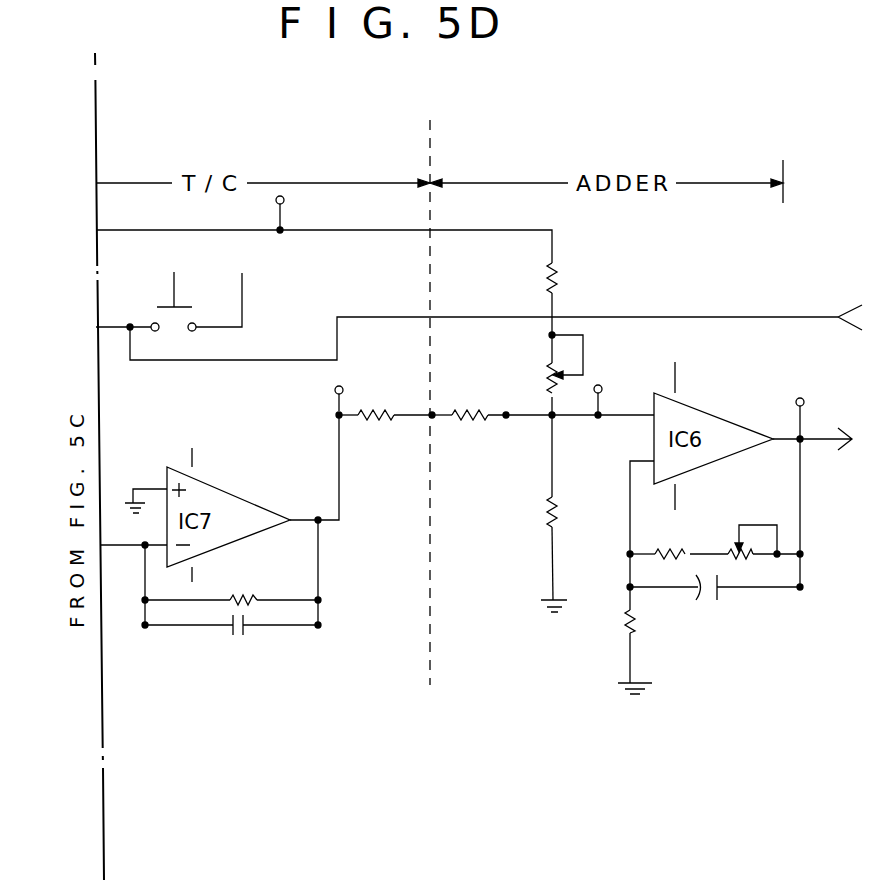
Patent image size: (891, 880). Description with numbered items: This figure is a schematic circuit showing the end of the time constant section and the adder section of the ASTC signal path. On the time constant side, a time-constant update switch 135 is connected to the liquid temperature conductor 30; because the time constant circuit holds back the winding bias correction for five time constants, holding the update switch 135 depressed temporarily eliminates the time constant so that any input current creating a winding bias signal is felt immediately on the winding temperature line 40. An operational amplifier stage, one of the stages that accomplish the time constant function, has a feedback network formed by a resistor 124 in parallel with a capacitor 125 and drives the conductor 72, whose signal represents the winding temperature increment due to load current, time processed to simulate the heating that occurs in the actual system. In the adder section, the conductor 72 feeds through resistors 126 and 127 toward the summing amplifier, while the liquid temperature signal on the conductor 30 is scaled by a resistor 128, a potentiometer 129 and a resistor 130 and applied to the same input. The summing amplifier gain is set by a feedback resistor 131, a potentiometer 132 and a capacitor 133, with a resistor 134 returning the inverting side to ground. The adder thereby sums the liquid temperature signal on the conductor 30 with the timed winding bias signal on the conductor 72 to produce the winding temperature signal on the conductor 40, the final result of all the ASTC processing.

The conductor 30 is at (372, 230).
The winding temperature line 40 is at (778, 437).
The conductor 72 is at (339, 490).
The feedback resistor 124 is at (233, 595).
The feedback capacitor 125 is at (244, 634).
The resistor 126 is at (370, 410).
The resistor 127 is at (463, 410).
The resistor 128 is at (556, 292).
The potentiometer 129 is at (584, 363).
The resistor 130 is at (552, 520).
The resistor 131 is at (682, 552).
The potentiometer 132 is at (743, 562).
The capacitor 133 is at (719, 592).
The resistor 134 is at (633, 628).
The time-constant update switch 135 is at (174, 288).